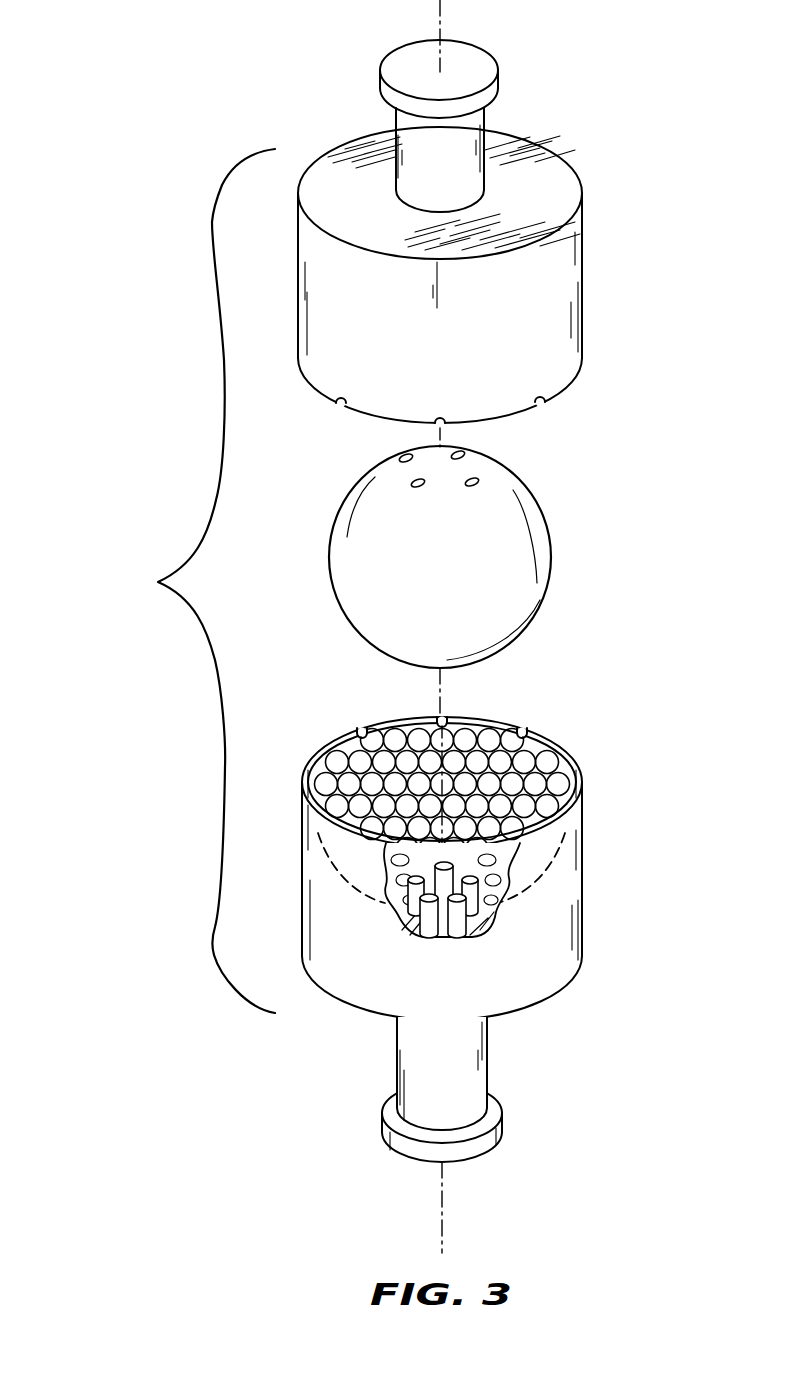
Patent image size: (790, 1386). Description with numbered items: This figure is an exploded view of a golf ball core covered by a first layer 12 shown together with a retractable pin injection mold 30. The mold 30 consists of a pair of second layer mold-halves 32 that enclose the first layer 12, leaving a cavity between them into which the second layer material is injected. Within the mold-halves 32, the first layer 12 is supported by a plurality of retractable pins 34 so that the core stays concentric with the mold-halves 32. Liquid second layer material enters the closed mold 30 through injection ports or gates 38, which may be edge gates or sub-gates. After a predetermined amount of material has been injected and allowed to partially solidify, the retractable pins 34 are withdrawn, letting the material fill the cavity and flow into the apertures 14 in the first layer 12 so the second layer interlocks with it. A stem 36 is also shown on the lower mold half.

The retractable pin injection mold 30 is at (132, 588).
The second layer mold-halves 32 is at (582, 243).
The injection ports or gates 38 is at (541, 405).
The retractable pins 34 is at (470, 936).
The lower stem 36 is at (488, 1070).
The first layer 12 is at (468, 557).
The apertures 14 is at (480, 481).